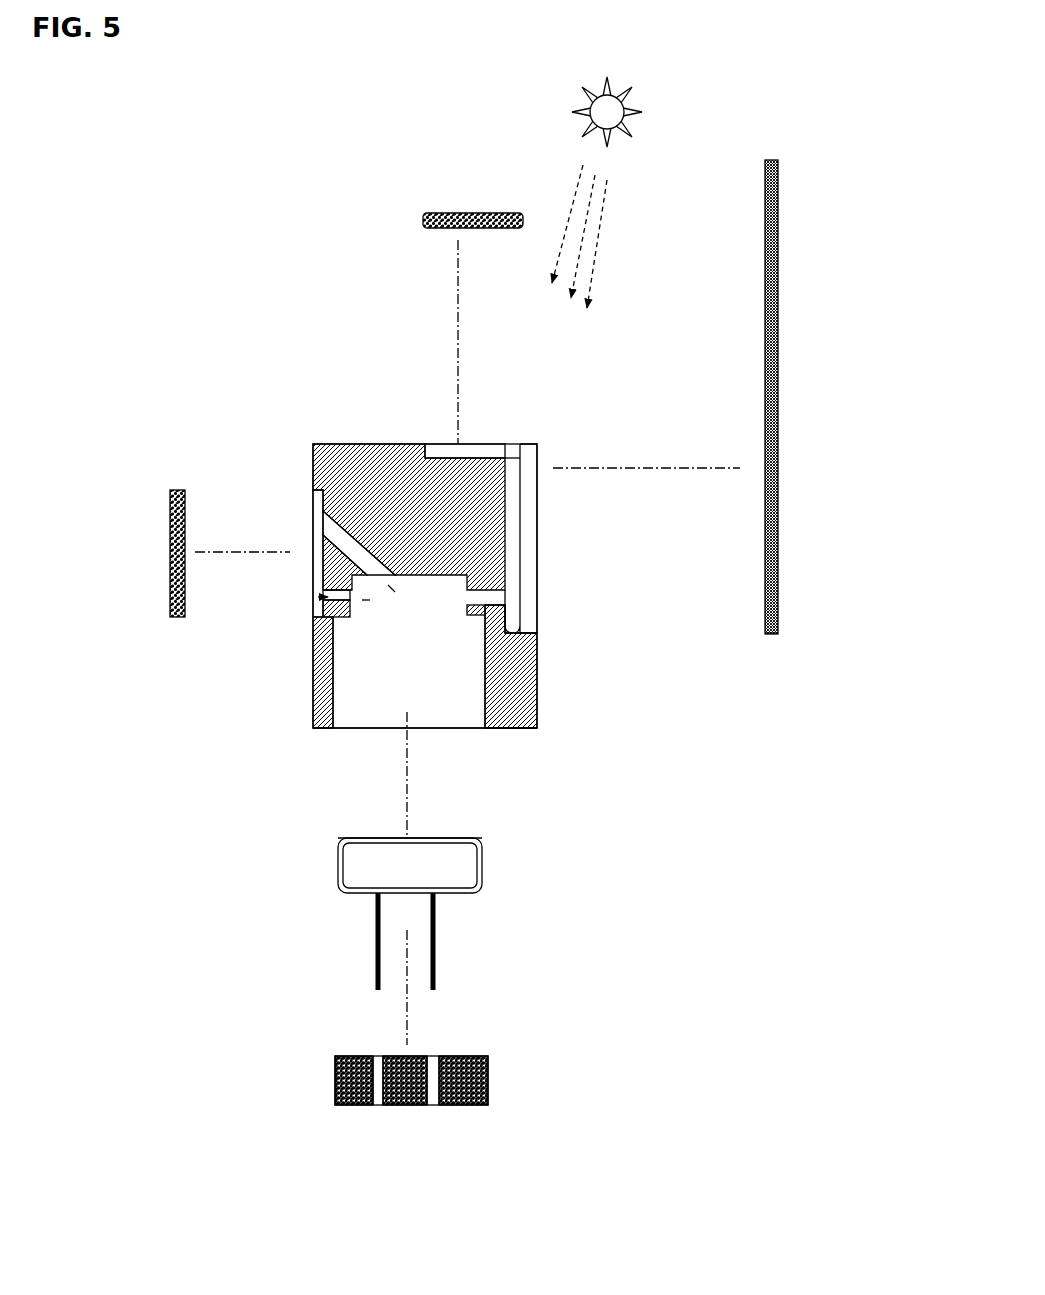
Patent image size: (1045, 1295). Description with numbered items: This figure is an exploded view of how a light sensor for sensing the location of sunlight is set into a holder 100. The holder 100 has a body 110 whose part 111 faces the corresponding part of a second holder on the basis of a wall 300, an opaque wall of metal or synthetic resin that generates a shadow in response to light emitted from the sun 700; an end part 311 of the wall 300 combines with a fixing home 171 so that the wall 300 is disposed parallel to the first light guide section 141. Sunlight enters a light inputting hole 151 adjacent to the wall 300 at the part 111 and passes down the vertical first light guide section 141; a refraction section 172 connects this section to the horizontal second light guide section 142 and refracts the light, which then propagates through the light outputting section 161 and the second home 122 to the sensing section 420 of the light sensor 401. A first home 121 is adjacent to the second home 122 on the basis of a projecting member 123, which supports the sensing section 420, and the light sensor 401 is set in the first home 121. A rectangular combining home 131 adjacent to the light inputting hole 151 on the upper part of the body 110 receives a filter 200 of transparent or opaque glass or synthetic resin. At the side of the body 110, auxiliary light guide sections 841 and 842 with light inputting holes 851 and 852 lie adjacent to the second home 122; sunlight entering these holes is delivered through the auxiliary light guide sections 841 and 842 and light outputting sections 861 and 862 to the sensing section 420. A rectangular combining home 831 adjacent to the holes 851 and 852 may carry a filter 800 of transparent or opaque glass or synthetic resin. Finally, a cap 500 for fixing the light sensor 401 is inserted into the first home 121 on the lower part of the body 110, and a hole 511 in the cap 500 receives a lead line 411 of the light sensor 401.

The holder 100 is at (433, 523).
The body 110 is at (313, 708).
The part of the body 111 is at (538, 697).
The first home 121 is at (350, 688).
The second home 122 is at (415, 585).
The projecting member 123 is at (538, 655).
The combining home 131 is at (440, 450).
The first light guide section 141 is at (540, 515).
The second light guide section 142 is at (538, 548).
The light inputting hole 151 is at (513, 468).
The light outputting section 161 is at (453, 600).
The fixing home 171 is at (538, 626).
The refraction section 172 is at (538, 595).
The filter 200 is at (485, 213).
The wall 300 is at (778, 312).
The end part of the wall 311 is at (770, 635).
The light sensor 401 is at (462, 870).
The lead line 411 is at (437, 950).
The sensing section 420 is at (450, 838).
The cap 500 is at (490, 1080).
The hole 511 is at (433, 1105).
The sun 700 is at (636, 100).
The filter 800 is at (170, 522).
The combining home 831 is at (313, 545).
The auxiliary light guide section 841 is at (313, 488).
The auxiliary light guide section 842 is at (313, 577).
The light inputting hole 851 is at (332, 530).
The light inputting hole 852 is at (313, 600).
The light outputting section 861 is at (383, 578).
The light outputting section 862 is at (355, 598).